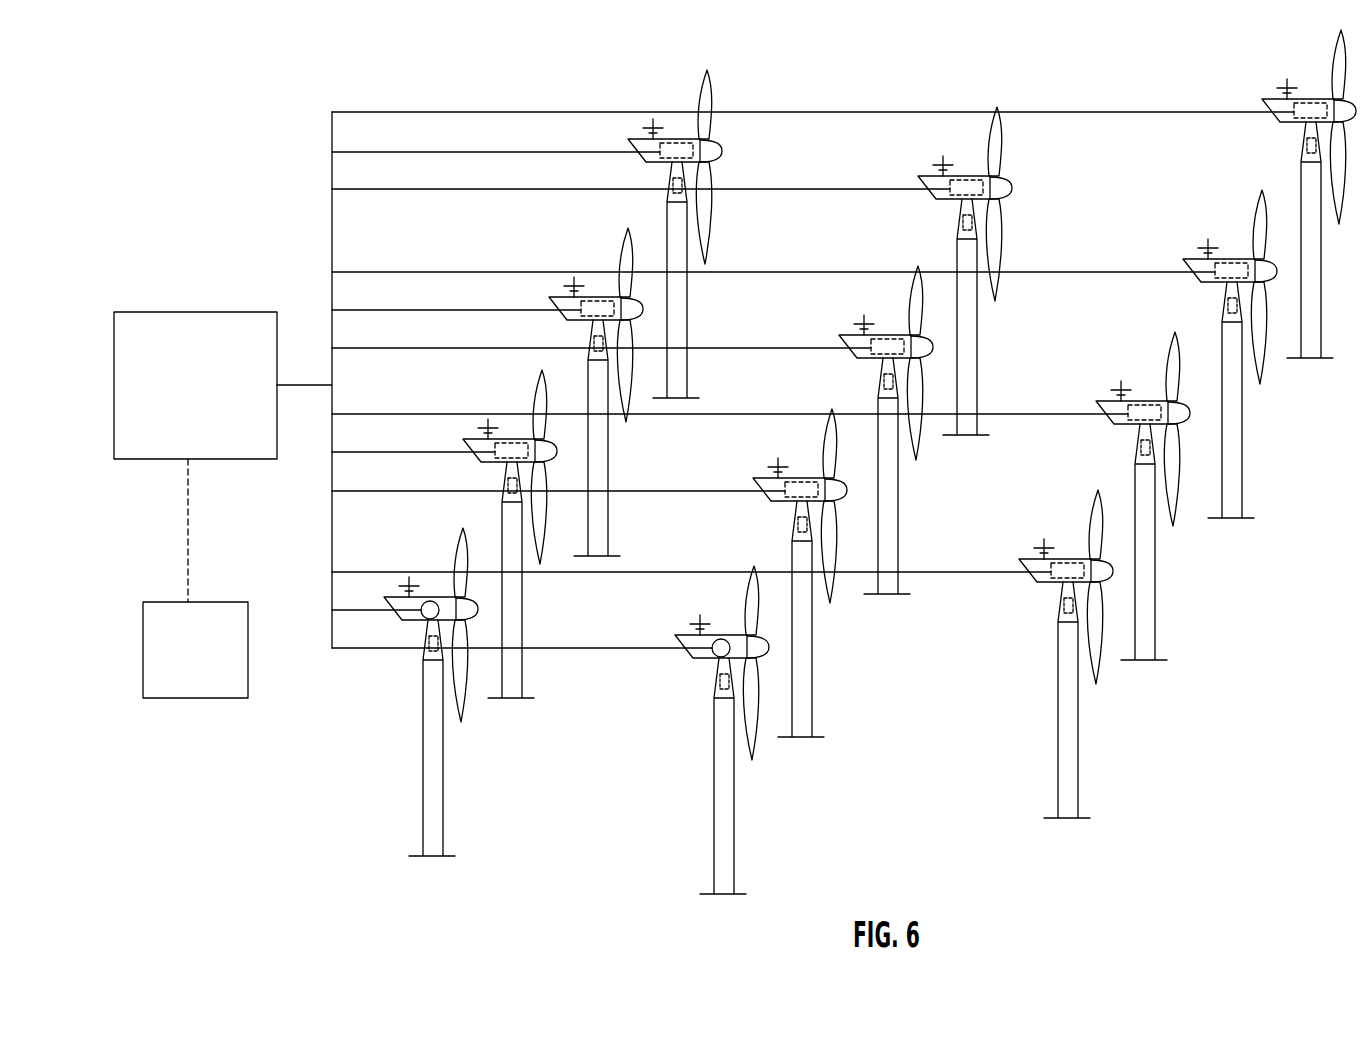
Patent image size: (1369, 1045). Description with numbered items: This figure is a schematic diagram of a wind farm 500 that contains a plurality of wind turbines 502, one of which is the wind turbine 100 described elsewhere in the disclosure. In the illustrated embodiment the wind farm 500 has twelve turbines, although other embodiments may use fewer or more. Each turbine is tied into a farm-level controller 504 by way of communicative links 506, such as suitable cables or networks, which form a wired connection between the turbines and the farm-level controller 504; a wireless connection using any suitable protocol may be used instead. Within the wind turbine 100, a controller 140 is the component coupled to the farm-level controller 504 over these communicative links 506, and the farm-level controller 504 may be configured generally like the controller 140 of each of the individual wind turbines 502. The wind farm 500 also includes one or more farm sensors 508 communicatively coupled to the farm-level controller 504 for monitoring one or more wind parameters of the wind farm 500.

The wind farm 500 is at (226, 172).
The wind turbines 502 is at (546, 688).
The farm-level controller 504 is at (208, 398).
The communicative links 506 is at (487, 189).
The farm sensors 508 is at (208, 668).
The wind turbine 100 is at (464, 804).
The controller 140 is at (428, 600).